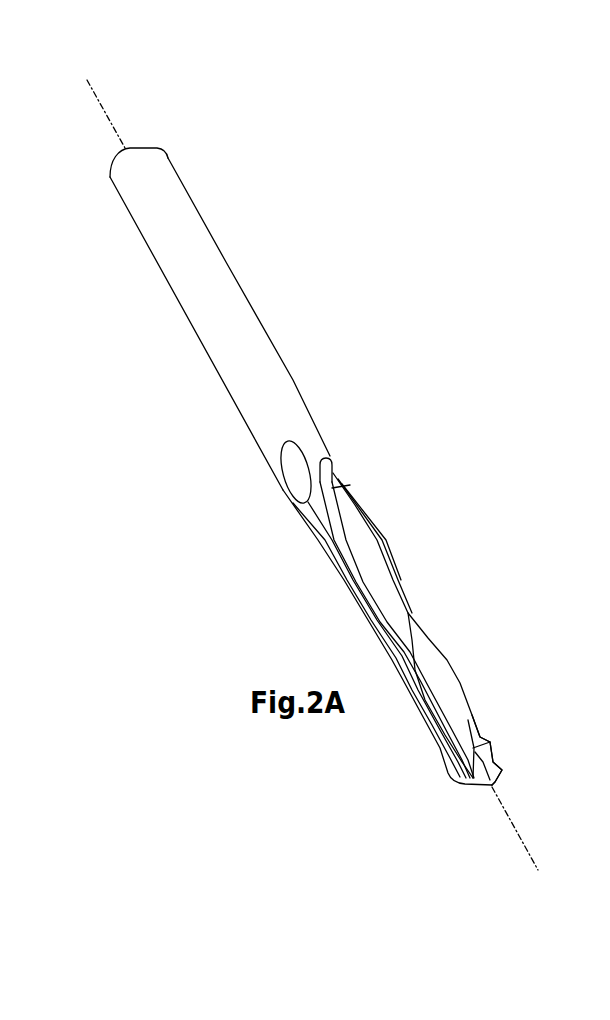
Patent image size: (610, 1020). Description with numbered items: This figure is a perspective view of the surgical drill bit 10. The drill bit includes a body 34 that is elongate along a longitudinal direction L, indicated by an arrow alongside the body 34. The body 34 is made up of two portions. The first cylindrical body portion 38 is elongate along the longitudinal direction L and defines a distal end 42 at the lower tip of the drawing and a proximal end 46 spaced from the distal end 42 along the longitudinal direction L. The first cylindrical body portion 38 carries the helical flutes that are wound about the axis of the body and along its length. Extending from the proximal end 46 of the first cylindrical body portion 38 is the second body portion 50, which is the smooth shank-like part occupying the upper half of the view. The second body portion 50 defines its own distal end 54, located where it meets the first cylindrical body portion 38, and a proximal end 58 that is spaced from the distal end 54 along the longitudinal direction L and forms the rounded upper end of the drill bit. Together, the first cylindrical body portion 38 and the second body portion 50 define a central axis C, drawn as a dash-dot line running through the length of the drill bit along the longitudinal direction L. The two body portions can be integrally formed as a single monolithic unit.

The surgical drill bit 10 is at (282, 227).
The body 34 is at (180, 273).
The first cylindrical body portion 38 is at (360, 550).
The distal end 42 is at (492, 786).
The proximal end 46 is at (332, 454).
The second body portion 50 is at (236, 342).
The distal end 54 is at (285, 484).
The proximal end 58 is at (145, 147).
The longitudinal direction L is at (187, 522).
The central axis C is at (520, 835).